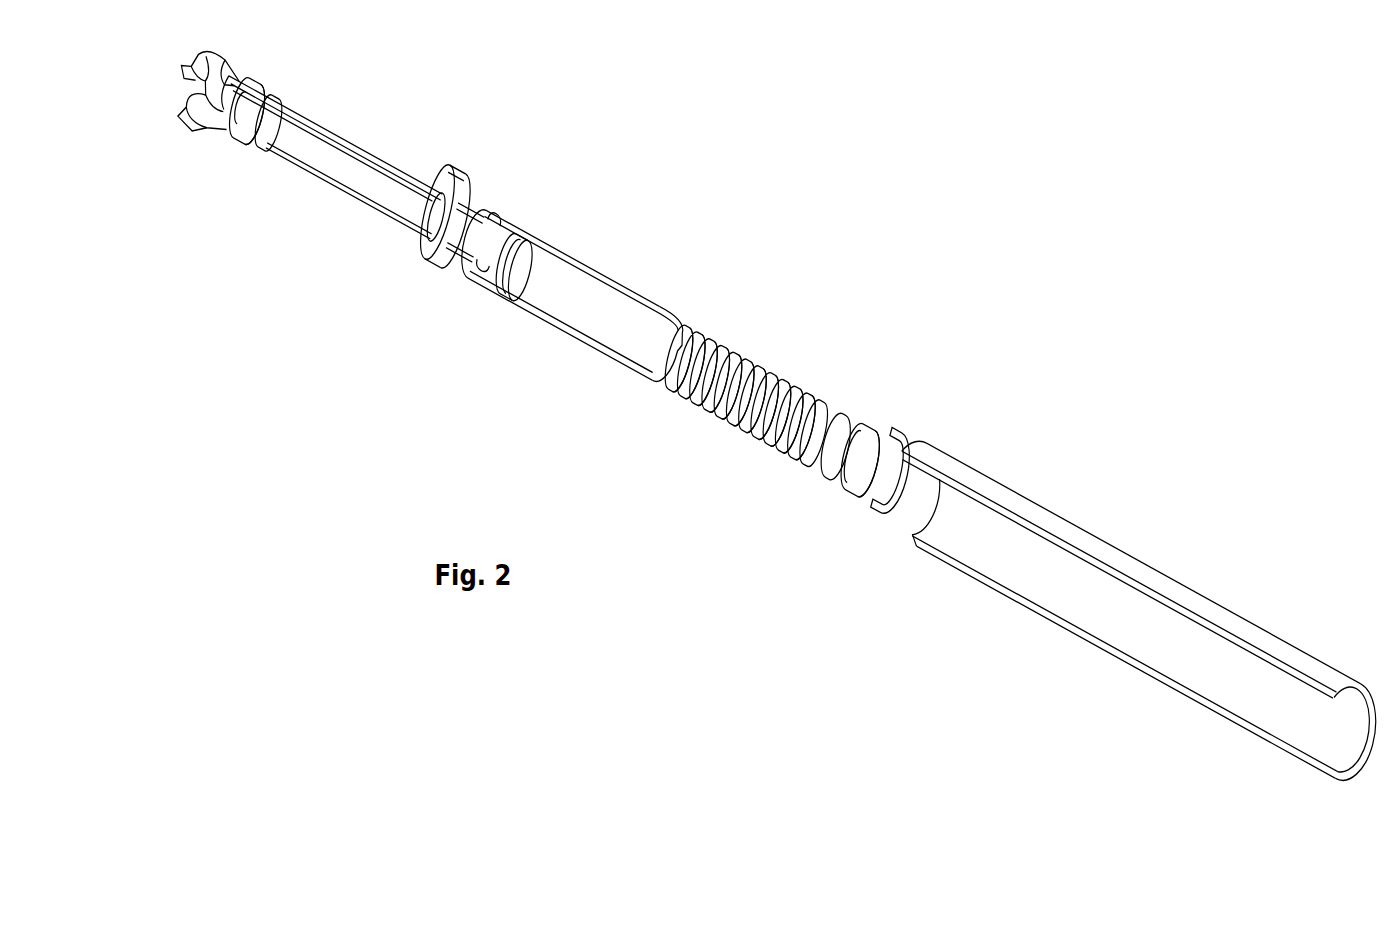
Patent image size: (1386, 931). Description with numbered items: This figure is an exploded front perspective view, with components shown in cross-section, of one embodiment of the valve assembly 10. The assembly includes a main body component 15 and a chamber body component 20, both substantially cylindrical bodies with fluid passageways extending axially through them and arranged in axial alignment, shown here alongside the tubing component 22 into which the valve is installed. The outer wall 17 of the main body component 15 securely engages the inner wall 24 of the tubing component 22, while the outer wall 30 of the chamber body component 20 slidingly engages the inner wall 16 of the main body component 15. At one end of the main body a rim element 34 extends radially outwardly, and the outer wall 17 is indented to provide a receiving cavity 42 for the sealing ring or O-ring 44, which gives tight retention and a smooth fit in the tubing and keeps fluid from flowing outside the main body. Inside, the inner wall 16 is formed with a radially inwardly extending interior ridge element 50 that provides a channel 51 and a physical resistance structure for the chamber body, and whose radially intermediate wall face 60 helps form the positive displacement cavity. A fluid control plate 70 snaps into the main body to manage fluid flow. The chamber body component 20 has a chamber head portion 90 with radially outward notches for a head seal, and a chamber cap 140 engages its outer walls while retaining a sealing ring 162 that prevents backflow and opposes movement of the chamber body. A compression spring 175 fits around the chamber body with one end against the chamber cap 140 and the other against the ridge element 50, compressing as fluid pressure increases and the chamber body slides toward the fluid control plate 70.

The valve assembly 10 is at (280, 443).
The main body component 15 is at (636, 244).
The inner wall of main body component 16 is at (621, 344).
The outer wall of main body component 17 is at (551, 241).
The chamber body component 20 is at (380, 108).
The tubing component 22 is at (1126, 561).
The inner wall of tubing component 24 is at (1324, 746).
The outer wall of chamber body component 30 is at (332, 133).
The rim element 34 is at (456, 168).
The receiving cavity 42 is at (504, 221).
The sealing ring (O-ring) 44 is at (901, 433).
The interior ridge element 50 is at (512, 280).
The channel 51 is at (428, 250).
The radially intermediate wall face 60 is at (486, 276).
The fluid control plate 70 is at (180, 80).
The chamber head portion 90 is at (240, 133).
The chamber cap 140 is at (845, 491).
The sealing ring 162 is at (833, 409).
The compression spring 175 is at (746, 379).